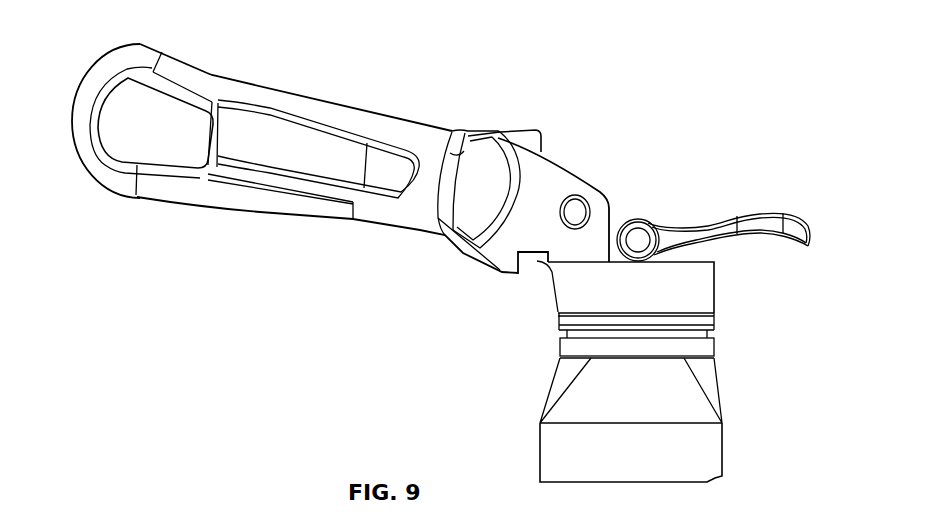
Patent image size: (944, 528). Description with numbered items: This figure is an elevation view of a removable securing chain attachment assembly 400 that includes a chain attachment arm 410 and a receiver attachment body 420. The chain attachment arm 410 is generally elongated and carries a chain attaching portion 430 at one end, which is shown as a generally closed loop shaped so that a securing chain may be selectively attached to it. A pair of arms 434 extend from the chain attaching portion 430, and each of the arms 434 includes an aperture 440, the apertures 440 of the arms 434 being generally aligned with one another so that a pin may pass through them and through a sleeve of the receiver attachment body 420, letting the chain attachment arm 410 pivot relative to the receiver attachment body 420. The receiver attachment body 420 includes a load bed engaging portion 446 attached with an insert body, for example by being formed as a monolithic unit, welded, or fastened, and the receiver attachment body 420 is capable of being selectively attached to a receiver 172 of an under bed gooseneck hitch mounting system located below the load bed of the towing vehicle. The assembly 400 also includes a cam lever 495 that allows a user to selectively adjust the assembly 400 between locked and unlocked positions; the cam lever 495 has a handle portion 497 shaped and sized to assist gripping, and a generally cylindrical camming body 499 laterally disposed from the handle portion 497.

The removable securing chain attachment assembly 400 is at (557, 51).
The chain attachment arm 410 is at (215, 193).
The chain attaching portion 430 is at (102, 150).
The arms 434 is at (557, 173).
The apertures 440 is at (578, 207).
The cam lever 495 is at (755, 214).
The handle portion 497 is at (797, 226).
The camming body 499 is at (612, 252).
The receiver attachment body 420 is at (766, 289).
The load bed engaging portion 446 is at (705, 303).
The receiver 172 is at (713, 460).